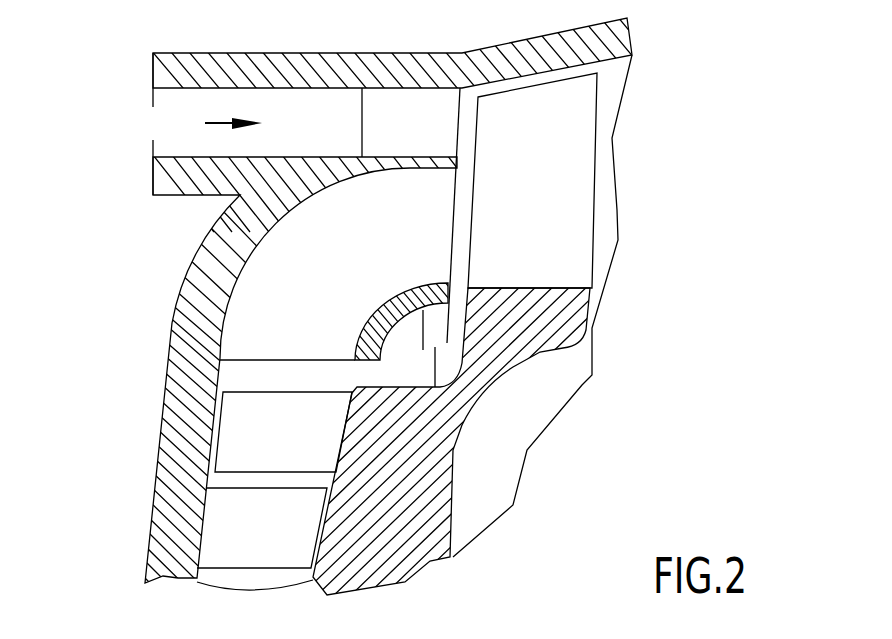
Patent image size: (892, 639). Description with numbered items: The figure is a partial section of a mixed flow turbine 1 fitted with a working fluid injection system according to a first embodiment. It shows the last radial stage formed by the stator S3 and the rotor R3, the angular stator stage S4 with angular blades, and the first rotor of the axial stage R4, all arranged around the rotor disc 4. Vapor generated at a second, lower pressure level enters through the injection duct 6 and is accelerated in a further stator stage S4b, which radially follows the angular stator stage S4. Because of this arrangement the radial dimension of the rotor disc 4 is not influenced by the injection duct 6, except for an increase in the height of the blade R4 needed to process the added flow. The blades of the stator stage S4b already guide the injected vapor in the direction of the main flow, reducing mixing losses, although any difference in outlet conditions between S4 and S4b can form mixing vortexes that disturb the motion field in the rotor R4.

The mixed flow turbine 1 is at (753, 117).
The rotor disc 4 is at (415, 492).
The injection duct 6 is at (162, 122).
The further stator stage S4b is at (433, 138).
The first rotor of the axial stage R4 is at (548, 205).
The angular stator stage S4 is at (352, 290).
The last radial rotor stage R3 is at (290, 452).
The last radial stator stage S3 is at (273, 550).